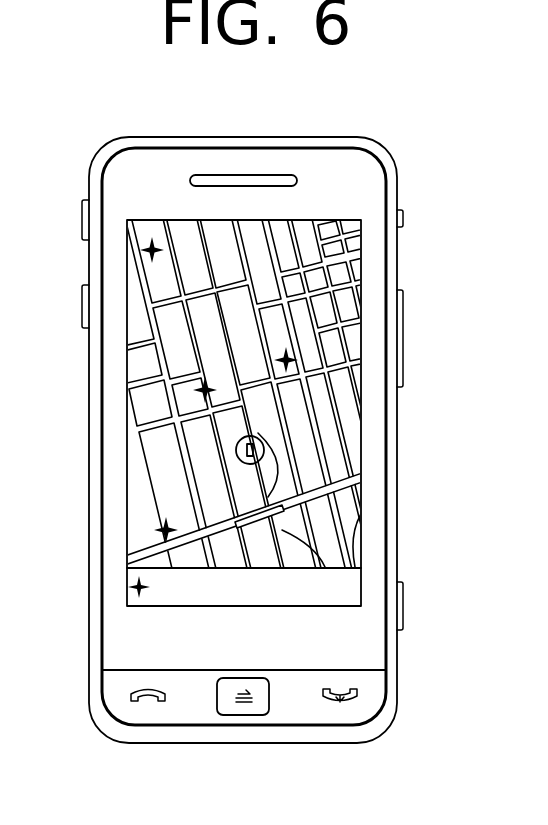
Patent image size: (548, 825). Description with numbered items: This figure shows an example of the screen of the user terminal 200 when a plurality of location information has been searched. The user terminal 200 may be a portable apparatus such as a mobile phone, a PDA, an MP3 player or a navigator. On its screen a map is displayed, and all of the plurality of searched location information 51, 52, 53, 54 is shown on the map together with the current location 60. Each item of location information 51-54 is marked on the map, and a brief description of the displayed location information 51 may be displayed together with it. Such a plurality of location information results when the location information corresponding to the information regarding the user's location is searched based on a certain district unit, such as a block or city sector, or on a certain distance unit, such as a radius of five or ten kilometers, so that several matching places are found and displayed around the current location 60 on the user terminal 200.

The user terminal 200 is at (398, 266).
The location information 51 is at (300, 356).
The location information 52 is at (150, 250).
The location information 53 is at (205, 390).
The location information 54 is at (160, 528).
The current location 60 is at (264, 448).